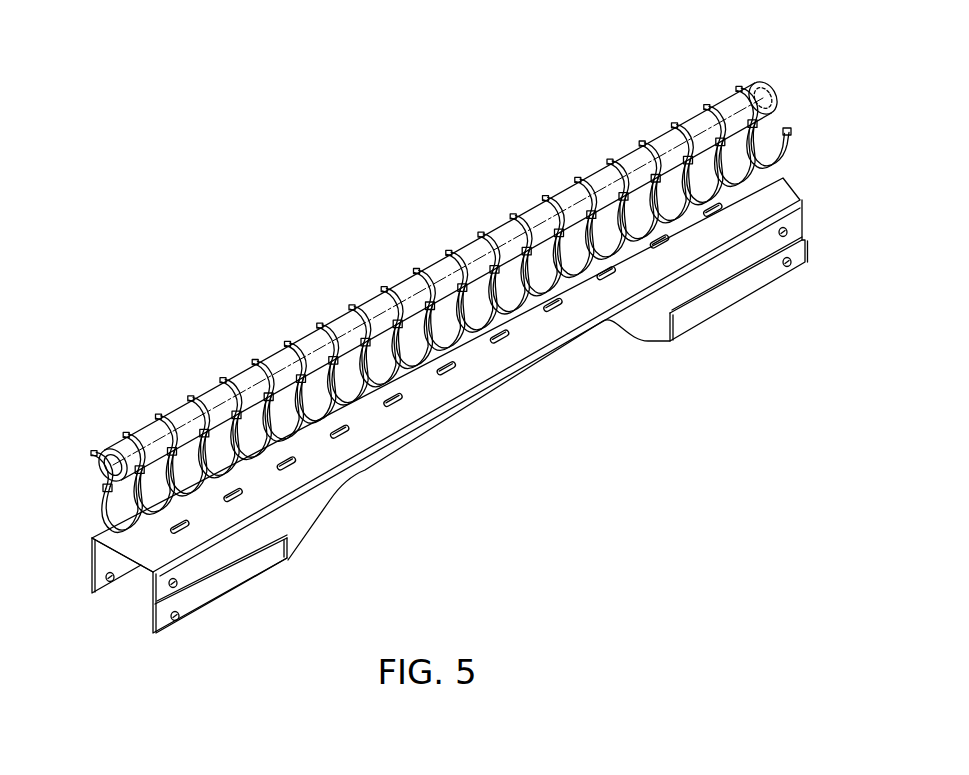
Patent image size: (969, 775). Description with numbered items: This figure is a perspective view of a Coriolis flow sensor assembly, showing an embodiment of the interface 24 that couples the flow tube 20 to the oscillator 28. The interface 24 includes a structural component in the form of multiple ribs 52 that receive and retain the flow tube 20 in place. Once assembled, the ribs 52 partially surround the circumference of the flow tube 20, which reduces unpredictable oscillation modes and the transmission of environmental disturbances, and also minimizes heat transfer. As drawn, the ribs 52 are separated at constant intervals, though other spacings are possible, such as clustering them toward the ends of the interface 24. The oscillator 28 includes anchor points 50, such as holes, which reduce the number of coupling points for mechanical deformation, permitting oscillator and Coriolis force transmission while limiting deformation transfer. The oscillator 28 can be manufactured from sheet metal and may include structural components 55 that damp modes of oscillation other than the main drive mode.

The flow tube 20 is at (782, 89).
The interface 24 is at (801, 144).
The oscillator 28 is at (812, 232).
The anchor points 50 is at (141, 540).
The ribs 52 is at (457, 308).
The structural components 55 is at (224, 560).